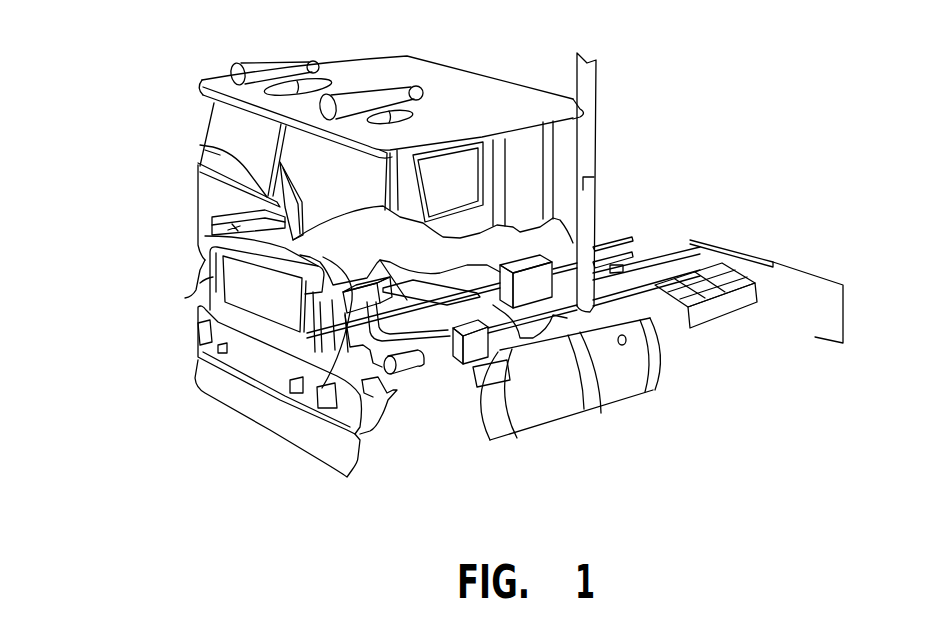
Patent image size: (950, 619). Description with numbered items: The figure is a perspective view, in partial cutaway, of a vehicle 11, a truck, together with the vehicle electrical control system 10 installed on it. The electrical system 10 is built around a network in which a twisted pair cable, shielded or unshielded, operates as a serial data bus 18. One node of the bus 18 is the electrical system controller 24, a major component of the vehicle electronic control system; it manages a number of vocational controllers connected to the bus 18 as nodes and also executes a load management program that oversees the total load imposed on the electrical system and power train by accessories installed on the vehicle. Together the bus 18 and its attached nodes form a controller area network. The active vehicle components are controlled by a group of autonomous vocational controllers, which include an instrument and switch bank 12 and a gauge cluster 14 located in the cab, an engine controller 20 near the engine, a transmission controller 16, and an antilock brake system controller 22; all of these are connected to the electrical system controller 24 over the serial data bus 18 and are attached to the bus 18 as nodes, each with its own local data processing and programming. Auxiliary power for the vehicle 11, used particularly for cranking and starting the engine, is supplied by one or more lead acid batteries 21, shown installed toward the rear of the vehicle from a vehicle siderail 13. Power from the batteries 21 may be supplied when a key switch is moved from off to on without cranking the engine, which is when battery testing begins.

The vehicle electrical control system 10 is at (442, 265).
The vehicle 11 is at (496, 67).
The instrument and switch bank 12 is at (200, 145).
The vehicle siderail 13 is at (768, 263).
The gauge cluster 14 is at (213, 232).
The transmission controller 16 is at (550, 395).
The serial data bus 18 is at (200, 283).
The engine controller 20 is at (342, 287).
The lead acid batteries 21 is at (707, 317).
The antilock brake system controller 22 is at (450, 366).
The electrical system controller 24 is at (540, 258).